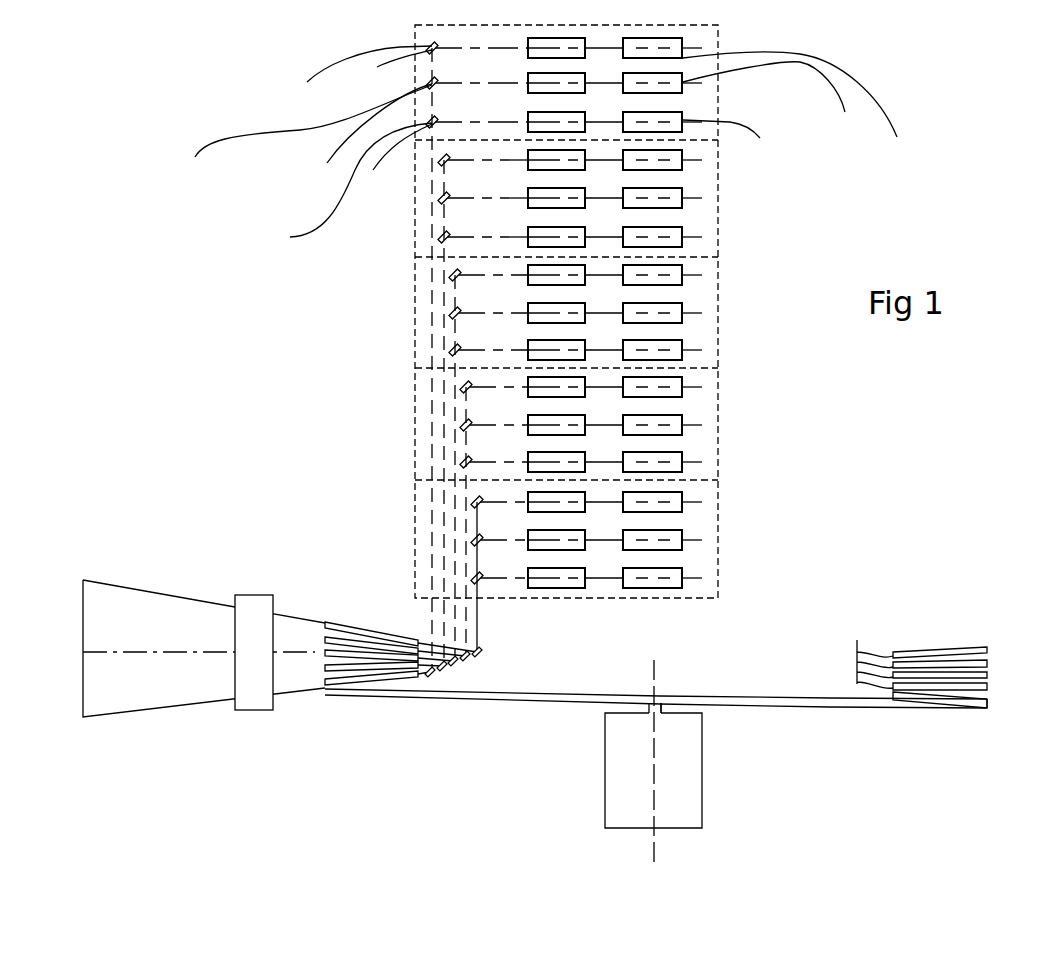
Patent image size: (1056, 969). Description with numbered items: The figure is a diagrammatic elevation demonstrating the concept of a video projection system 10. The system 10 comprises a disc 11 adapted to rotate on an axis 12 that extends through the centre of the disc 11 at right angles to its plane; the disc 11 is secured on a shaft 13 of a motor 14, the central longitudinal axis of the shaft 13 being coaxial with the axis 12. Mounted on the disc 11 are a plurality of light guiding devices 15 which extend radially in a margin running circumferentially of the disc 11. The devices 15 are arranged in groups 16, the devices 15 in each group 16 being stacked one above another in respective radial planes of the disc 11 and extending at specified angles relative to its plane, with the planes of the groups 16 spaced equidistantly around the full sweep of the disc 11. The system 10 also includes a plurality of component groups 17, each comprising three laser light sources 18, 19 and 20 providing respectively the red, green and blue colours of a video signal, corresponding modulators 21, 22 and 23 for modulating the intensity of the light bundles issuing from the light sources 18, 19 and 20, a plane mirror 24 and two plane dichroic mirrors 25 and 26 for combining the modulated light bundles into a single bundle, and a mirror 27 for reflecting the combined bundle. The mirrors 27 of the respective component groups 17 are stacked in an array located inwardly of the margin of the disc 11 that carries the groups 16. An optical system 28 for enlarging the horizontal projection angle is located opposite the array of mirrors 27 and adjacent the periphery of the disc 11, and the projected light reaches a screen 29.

The video projection system 10 is at (849, 448).
The disc 11 is at (833, 712).
The axis 12 is at (654, 672).
The shaft 13 is at (665, 708).
The motor 14 is at (702, 797).
The light guiding devices 15 is at (367, 622).
The groups 16 is at (1005, 647).
The component groups 17 is at (766, 532).
The laser light source 18 is at (741, 138).
The laser light source 19 is at (776, 104).
The laser light source 20 is at (797, 113).
The modulator 21 is at (396, 167).
The modulator 22 is at (367, 140).
The modulator 23 is at (390, 74).
The plane mirror 24 is at (353, 84).
The plane dichroic mirror 25 is at (306, 138).
The plane dichroic mirror 26 is at (336, 187).
The mirror 27 is at (492, 647).
The optical system 28 is at (258, 595).
The screen 29 is at (83, 597).